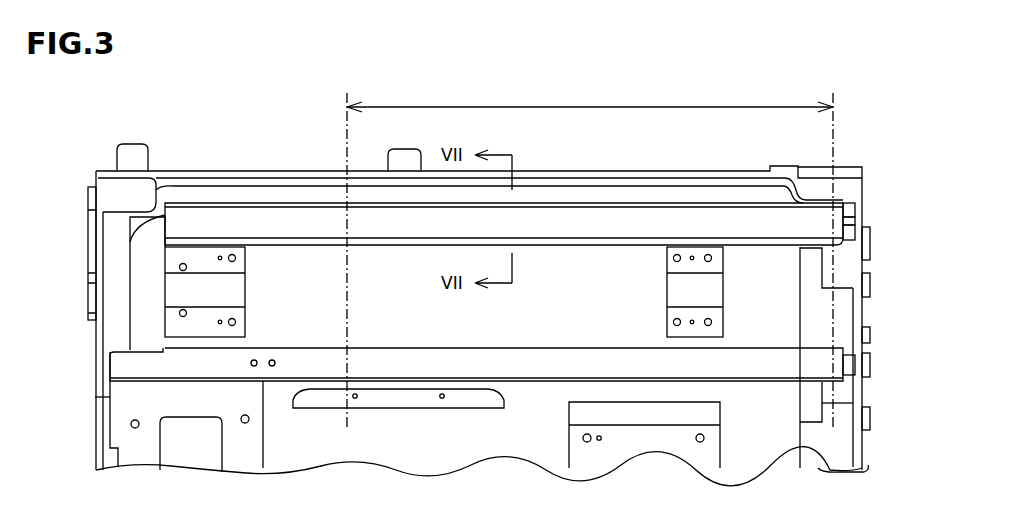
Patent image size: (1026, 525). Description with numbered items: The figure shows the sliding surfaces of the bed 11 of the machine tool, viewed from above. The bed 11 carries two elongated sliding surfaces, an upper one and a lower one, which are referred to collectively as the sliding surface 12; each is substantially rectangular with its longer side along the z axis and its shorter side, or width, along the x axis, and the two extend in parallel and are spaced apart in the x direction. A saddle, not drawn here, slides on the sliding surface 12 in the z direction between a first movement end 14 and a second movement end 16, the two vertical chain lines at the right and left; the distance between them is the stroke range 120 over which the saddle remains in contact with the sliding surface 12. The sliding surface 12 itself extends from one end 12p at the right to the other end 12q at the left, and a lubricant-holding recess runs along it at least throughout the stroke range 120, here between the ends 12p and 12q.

The bed 11 is at (172, 121).
The sliding surface 12 is at (636, 222).
The one end of sliding surface 12p is at (858, 222).
The other end of sliding surface 12q is at (163, 229).
The first movement end 14 is at (866, 313).
The second movement end 16 is at (345, 295).
The stroke range 120 is at (592, 107).